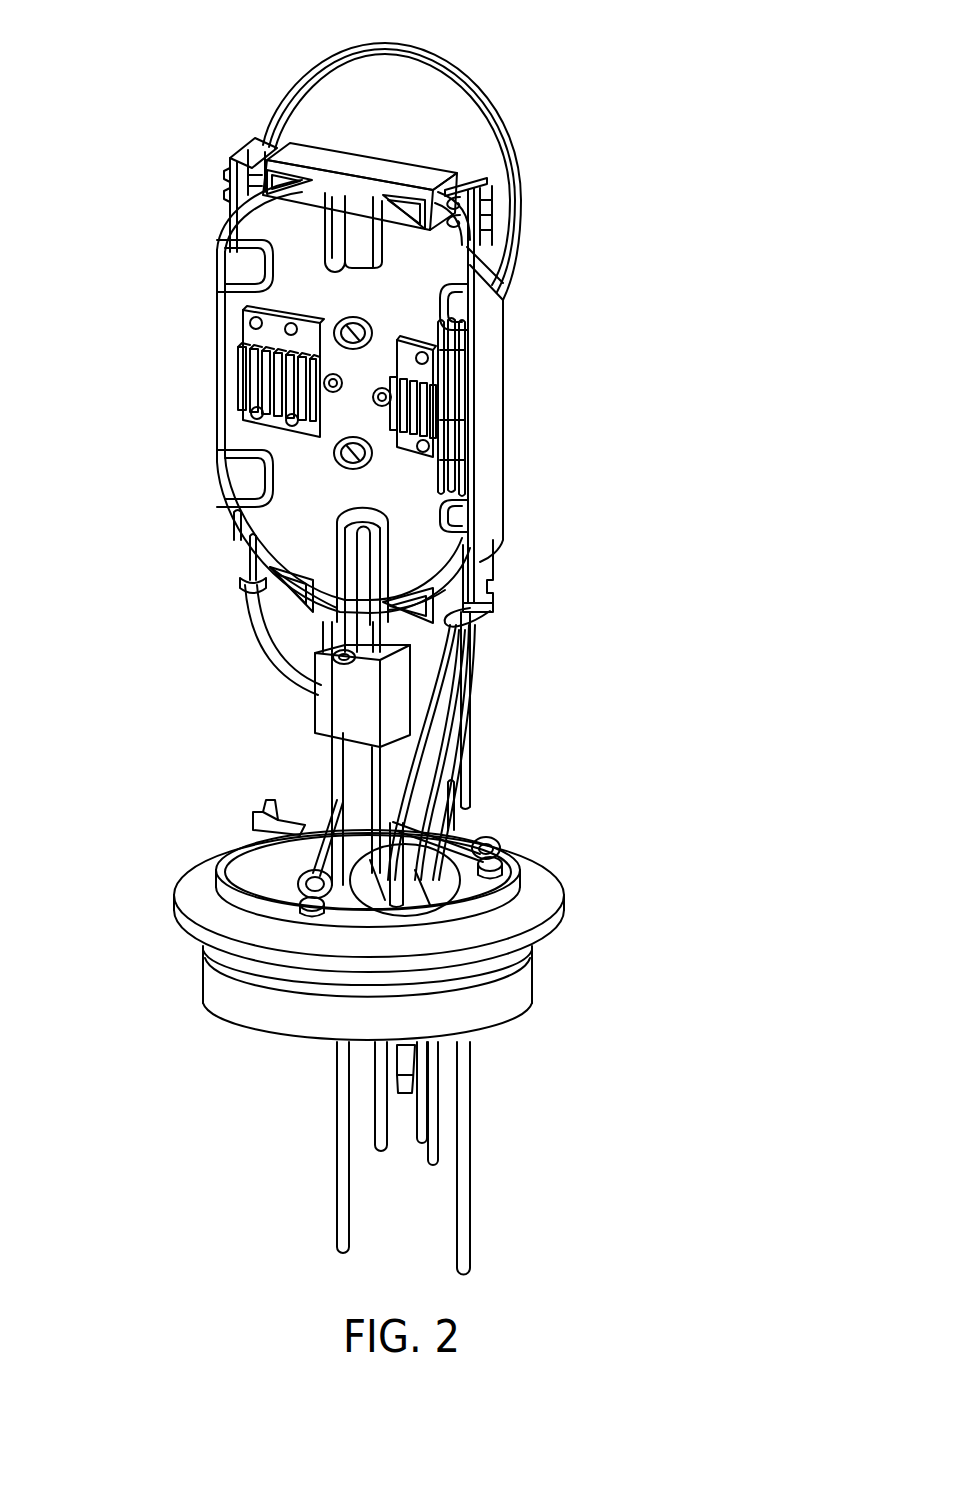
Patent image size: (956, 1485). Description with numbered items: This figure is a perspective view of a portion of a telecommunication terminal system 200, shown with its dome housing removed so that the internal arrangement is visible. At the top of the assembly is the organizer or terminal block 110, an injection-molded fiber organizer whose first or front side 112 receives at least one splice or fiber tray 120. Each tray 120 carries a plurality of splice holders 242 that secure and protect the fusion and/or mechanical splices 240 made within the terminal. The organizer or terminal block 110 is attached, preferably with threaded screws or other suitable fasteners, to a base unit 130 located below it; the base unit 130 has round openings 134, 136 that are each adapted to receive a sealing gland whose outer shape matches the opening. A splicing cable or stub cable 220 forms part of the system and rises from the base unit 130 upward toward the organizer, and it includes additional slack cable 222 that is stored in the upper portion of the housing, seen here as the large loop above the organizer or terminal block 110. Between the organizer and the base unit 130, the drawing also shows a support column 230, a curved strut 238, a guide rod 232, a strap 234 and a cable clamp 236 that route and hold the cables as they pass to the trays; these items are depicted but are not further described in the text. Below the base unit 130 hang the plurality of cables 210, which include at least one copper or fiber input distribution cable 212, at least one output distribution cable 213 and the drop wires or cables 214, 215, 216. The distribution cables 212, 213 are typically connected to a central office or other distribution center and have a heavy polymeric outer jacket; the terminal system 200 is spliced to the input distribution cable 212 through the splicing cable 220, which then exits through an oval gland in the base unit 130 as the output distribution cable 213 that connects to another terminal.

The telecommunication terminal system 200 is at (176, 47).
The slack cable 222 is at (497, 104).
The organizer or terminal block 110 is at (496, 467).
The front side 112 is at (288, 509).
The splice or fiber tray 120 is at (473, 420).
The splices 240 is at (462, 364).
The splice holders 242 is at (470, 434).
The curved strut 238 is at (270, 650).
The support post assembly 230 is at (470, 666).
The splicing cable or stub cable 220 is at (465, 740).
The guide rod 232 is at (436, 802).
The strap 234 is at (426, 831).
The cable clamp 236 is at (501, 862).
The base unit 130 is at (537, 1015).
The opening 134 is at (444, 895).
The opening 136 is at (247, 872).
The cables 210 is at (494, 1203).
The input distribution cable 212 is at (471, 1158).
The output distribution cable 213 is at (335, 1201).
The drop wire or cable 214 is at (431, 1166).
The drop wire or cable 215 is at (414, 1137).
The drop wire or cable 216 is at (374, 1120).